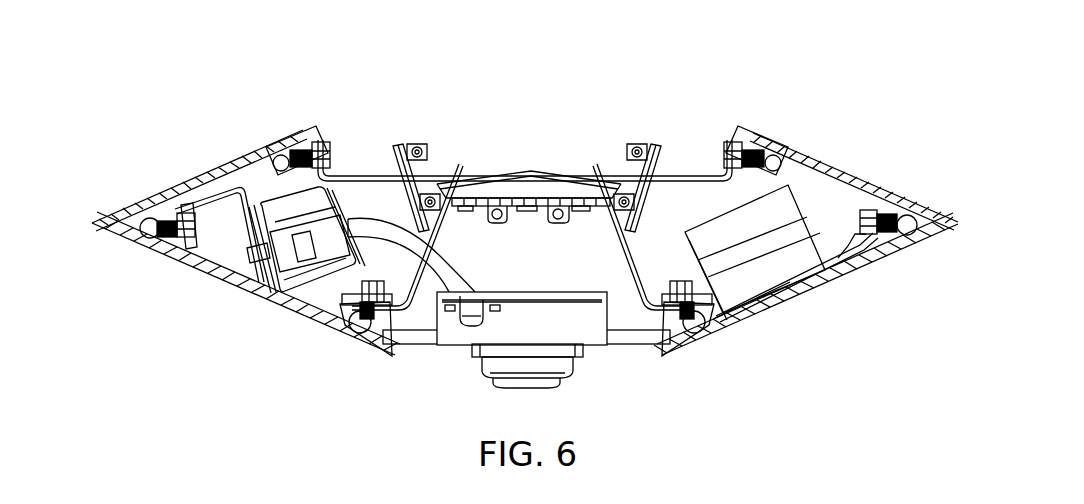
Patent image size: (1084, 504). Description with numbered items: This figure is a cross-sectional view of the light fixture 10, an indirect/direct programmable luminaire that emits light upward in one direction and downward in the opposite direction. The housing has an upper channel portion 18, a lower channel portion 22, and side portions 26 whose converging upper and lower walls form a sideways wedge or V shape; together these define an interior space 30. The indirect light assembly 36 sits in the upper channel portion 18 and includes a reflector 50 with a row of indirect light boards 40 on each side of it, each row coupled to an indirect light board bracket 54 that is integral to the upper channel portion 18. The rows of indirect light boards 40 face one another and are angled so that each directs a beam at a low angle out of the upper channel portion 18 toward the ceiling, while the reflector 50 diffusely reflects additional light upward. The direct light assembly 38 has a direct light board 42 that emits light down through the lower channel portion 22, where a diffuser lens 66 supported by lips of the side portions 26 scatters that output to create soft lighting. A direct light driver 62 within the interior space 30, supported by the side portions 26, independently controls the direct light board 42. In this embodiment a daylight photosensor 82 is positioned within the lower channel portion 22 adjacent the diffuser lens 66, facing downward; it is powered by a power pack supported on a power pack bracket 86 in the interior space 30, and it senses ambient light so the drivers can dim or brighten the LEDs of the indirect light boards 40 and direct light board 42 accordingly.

The light fixture 10 is at (179, 76).
The upper channel portion 18 is at (362, 166).
The lower channel portion 22 is at (618, 236).
The side portions 26 is at (130, 232).
The interior space 30 is at (227, 267).
The indirect light assembly 36 is at (521, 105).
The direct light assembly 38 is at (632, 360).
The indirect light boards 40 is at (403, 140).
The direct light board 42 is at (508, 210).
The reflector 50 is at (533, 171).
The indirect light board bracket 54 is at (404, 205).
The direct light driver 62 is at (770, 277).
The diffuser lens 66 is at (418, 340).
The daylight photosensor 82 is at (574, 377).
The power pack bracket 86 is at (232, 187).